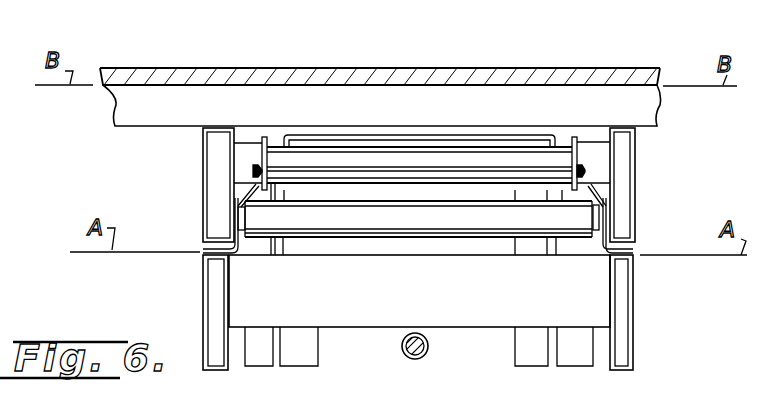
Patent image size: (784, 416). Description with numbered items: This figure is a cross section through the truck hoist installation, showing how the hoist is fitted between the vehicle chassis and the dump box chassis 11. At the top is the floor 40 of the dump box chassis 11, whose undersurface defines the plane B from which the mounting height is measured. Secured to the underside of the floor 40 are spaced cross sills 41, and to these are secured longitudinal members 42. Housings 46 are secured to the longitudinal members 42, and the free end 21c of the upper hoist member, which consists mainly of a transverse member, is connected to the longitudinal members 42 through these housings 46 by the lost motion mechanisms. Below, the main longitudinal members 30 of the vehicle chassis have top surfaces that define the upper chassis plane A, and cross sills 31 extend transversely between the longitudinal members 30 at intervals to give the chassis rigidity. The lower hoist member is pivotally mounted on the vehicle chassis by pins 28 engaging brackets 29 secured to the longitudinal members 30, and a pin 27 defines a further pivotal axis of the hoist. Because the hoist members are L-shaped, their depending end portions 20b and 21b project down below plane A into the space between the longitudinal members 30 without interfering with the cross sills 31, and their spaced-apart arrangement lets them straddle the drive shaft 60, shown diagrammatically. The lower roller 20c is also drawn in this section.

The dump box chassis 11 is at (363, 72).
The depending end portion 20b is at (258, 358).
The lower roller 20c is at (393, 215).
The depending end portion 21b is at (311, 357).
The free end 21c is at (293, 157).
The pin 27 is at (468, 413).
The pin 28 is at (235, 218).
The bracket 29 is at (238, 233).
The main longitudinal member 30 is at (203, 293).
The cross sill 31 is at (488, 308).
The floor 40 is at (403, 70).
The cross sill 41 is at (502, 97).
The longitudinal member 42 is at (203, 172).
The housing 46 is at (246, 153).
The drive shaft 60 is at (405, 344).